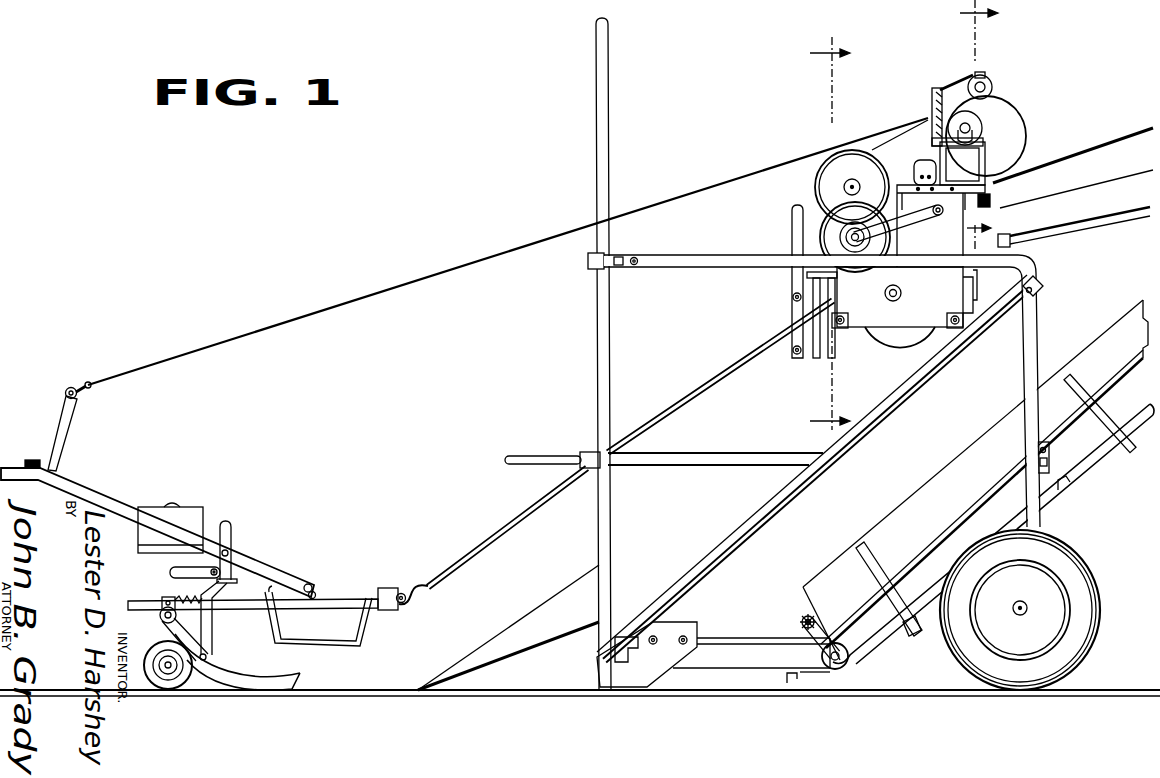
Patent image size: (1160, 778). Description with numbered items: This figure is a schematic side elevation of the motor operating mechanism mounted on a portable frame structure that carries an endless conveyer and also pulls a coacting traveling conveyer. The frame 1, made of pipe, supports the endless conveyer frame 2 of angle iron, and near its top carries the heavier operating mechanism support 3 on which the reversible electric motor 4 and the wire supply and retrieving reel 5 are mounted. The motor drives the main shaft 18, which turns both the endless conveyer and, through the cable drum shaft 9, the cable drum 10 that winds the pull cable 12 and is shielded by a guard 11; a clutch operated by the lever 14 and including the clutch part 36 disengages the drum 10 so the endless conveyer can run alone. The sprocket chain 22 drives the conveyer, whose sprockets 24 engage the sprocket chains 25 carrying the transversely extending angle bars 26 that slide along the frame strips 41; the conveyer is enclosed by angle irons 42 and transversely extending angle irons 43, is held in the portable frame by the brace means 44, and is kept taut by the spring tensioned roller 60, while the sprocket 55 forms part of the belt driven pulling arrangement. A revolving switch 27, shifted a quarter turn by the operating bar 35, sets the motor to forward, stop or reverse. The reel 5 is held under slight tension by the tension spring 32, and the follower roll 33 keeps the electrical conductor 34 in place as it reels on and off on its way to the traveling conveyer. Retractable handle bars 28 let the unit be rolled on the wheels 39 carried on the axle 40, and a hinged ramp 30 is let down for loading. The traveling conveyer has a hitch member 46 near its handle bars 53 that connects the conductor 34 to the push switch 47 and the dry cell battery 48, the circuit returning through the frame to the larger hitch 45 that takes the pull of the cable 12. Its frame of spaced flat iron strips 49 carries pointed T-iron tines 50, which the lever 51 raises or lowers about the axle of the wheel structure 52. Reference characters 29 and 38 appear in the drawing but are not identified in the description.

The frame 1 is at (608, 542).
The endless conveyer frame 2 is at (998, 492).
The operating mechanism support 3 is at (1015, 290).
The reversible electric motor 4 is at (838, 168).
The wire supply and retrieving reel 5 is at (1009, 142).
The cable drum shaft 9 is at (830, 231).
The cable drum 10 is at (875, 352).
The guard 11 is at (829, 349).
The cable 12 is at (504, 516).
The lever 14 is at (793, 277).
The main shaft 18 is at (848, 238).
The sprocket chain 22 is at (1108, 178).
The sprockets 24 is at (794, 618).
The sprocket chains 25 is at (862, 653).
The transversely extending angle bars 26 is at (786, 672).
The revolving switch 27 is at (932, 128).
The handle bars 28 is at (541, 457).
The side bracket 29 is at (914, 342).
The ramp 30 is at (546, 616).
The tension spring 32 is at (999, 117).
The follower roll 33 is at (986, 80).
The electrical conductor 34 is at (670, 192).
The operating bar 35 is at (920, 161).
The clutch 36 is at (985, 306).
The bolt 38 is at (1000, 202).
The wheels 39 is at (1090, 613).
The axle 40 is at (1017, 611).
The frame strips 41 is at (1048, 512).
The angle irons 42 is at (878, 561).
The transversely extending angle irons 43 is at (1133, 446).
The brace means 44 is at (1125, 225).
The hitch 45 is at (392, 586).
The hitch member 46 is at (92, 393).
The push switch 47 is at (40, 460).
The dry cell battery 48 is at (196, 513).
The flat iron strips 49 is at (337, 603).
The tines 50 is at (222, 676).
The lever 51 is at (170, 601).
The wheel structure 52 is at (160, 645).
The handle bars 53 is at (14, 467).
The sprocket 55 is at (897, 297).
The roller 60 is at (822, 666).